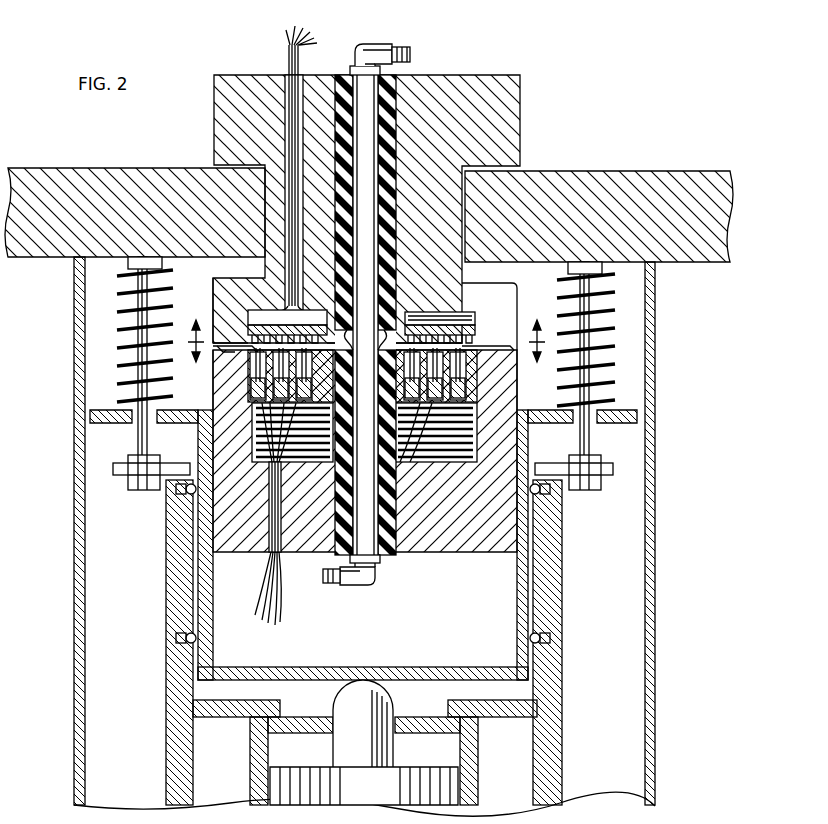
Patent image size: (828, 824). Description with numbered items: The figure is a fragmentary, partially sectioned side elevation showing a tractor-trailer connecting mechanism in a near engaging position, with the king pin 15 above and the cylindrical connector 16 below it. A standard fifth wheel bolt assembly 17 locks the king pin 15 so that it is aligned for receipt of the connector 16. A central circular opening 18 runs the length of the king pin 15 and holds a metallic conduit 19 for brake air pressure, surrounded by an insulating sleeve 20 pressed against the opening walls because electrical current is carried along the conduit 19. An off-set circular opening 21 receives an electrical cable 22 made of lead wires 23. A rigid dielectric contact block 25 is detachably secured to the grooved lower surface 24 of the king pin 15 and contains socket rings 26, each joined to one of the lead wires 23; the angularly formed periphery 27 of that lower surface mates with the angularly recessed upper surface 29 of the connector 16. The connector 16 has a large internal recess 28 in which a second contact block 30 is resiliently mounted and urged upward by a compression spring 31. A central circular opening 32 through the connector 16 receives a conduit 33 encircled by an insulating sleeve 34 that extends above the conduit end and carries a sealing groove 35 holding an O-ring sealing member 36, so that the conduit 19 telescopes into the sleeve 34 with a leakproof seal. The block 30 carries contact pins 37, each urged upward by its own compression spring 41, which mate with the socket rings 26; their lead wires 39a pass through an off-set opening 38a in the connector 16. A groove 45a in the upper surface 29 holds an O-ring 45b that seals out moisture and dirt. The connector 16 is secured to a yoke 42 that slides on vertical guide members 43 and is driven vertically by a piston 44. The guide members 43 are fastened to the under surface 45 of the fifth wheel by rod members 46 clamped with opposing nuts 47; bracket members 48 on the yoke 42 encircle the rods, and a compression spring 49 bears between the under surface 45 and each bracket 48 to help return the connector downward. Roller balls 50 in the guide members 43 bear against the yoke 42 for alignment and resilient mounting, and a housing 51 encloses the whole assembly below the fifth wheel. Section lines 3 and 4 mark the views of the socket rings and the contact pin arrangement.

The section line for FIG. 3 is at (366, 325).
The section line for FIG. 4 is at (365, 370).
The king pin 15 is at (518, 112).
The connector 16 is at (500, 509).
The fifth wheel bolt assembly 17 is at (677, 171).
The central circular opening 18 is at (400, 86).
The metallic conduit 19 is at (357, 64).
The insulating sleeve 20 is at (340, 80).
The off-set circular opening 21 is at (283, 88).
The electrical cable 22 is at (289, 70).
The lead wires 23 is at (310, 40).
The grooved lower surface 24 is at (476, 349).
The contact block 25 is at (478, 330).
The socket rings 26 is at (485, 300).
The periphery of lower surface 27 is at (517, 352).
The internal recess 28 is at (432, 470).
The upper surface of connector 29 is at (470, 358).
The contact block 30 is at (474, 382).
The compression spring 31 is at (458, 470).
The central circular opening 32 is at (397, 535).
The conduit 33 is at (377, 574).
The insulating sleeve 34 is at (390, 558).
The sealing groove 35 is at (347, 338).
The resilient sealing member 36 is at (389, 338).
The contact pins 37 is at (248, 364).
The off-set opening 38a is at (269, 512).
The lead wires 39a is at (282, 606).
The compression spring 41 is at (258, 412).
The yoke 42 is at (205, 560).
The vertical guide members 43 is at (175, 536).
The piston 44 is at (278, 778).
The under surface of fifth wheel 45 is at (33, 250).
The groove 45a is at (215, 370).
The O-ring 45b is at (213, 335).
The rod members 46 is at (145, 318).
The opposing nuts 47 is at (128, 479).
The bracket members 48 is at (90, 416).
The compression spring 49 is at (138, 290).
The roller balls 50 is at (185, 494).
The casing or housing 51 is at (74, 604).